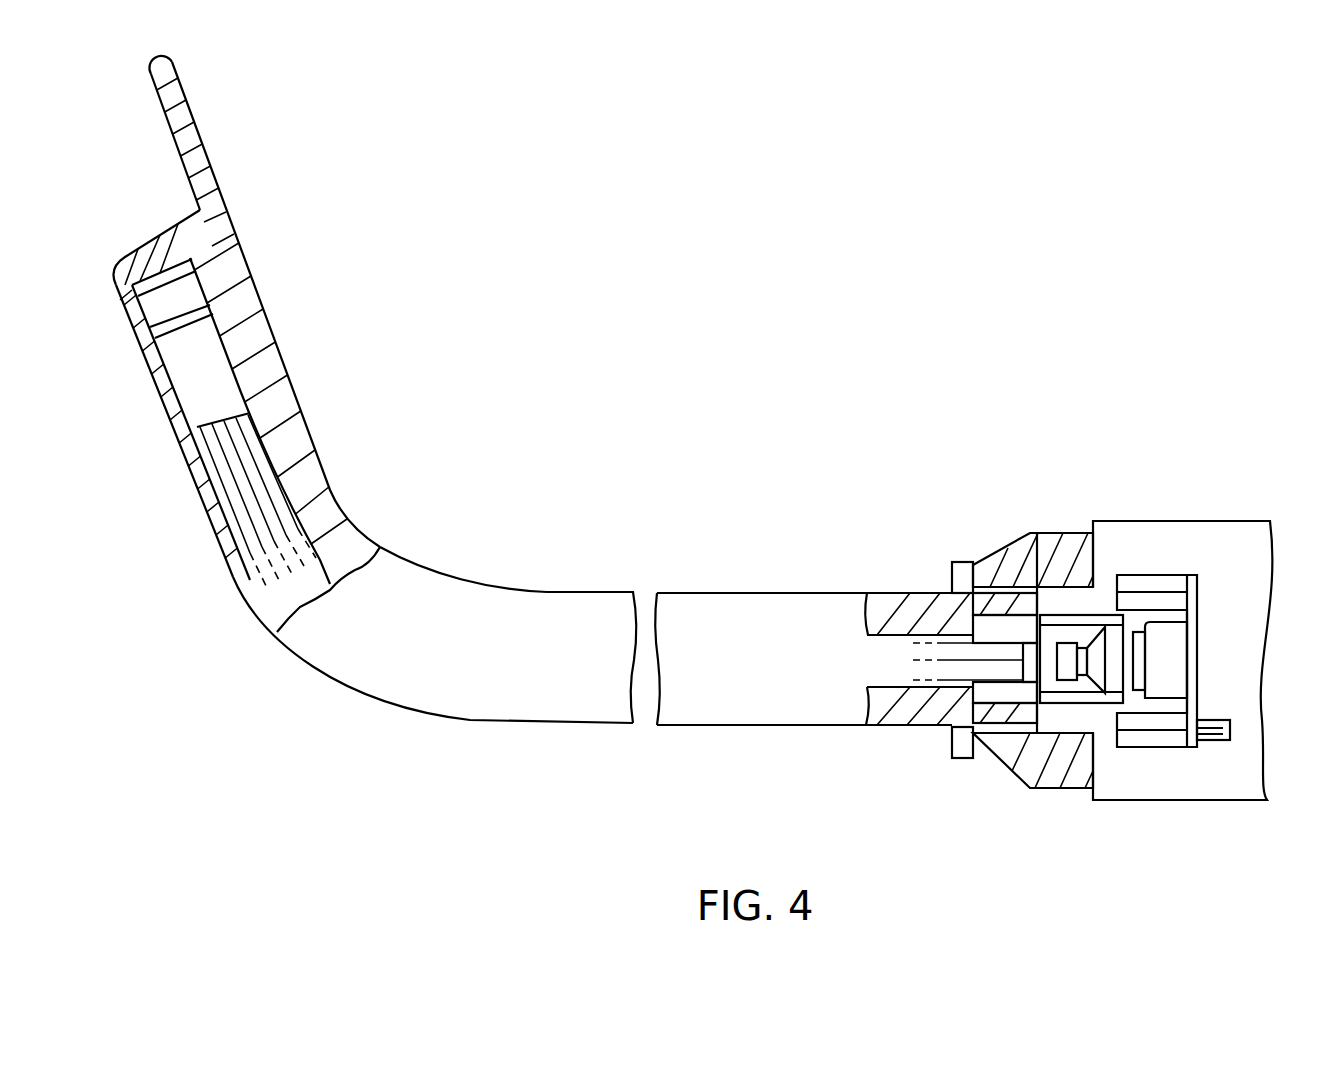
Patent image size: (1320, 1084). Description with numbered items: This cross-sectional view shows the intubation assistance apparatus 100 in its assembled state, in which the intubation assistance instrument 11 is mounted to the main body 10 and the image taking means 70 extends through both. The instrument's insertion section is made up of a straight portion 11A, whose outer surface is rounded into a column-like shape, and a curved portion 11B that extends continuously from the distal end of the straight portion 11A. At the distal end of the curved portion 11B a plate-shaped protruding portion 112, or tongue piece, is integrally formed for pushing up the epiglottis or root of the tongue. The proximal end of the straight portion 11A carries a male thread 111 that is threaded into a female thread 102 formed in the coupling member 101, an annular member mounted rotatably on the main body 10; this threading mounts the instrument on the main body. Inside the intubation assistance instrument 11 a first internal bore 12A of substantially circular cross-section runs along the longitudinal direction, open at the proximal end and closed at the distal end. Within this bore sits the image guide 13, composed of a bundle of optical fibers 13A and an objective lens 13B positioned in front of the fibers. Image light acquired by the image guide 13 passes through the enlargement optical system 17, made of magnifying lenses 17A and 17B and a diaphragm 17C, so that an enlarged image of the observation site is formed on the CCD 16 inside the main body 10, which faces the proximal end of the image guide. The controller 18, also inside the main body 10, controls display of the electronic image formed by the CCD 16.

The intubation assistance apparatus 100 is at (1117, 275).
The image taking means 70 is at (1001, 340).
The main body 10 is at (1226, 536).
The intubation assistance instrument 11 is at (548, 588).
The straight portion 11A is at (718, 700).
The curved portion 11B is at (375, 673).
The first internal bore 12A is at (186, 258).
The image guide 13 is at (355, 242).
The bundle of optical fibers 13A is at (250, 448).
The objective lens 13B is at (207, 316).
The protruding portion 112 is at (175, 112).
The male thread 111 is at (995, 582).
The coupling member 101 is at (1060, 763).
The female thread 102 is at (1023, 577).
The CCD 16 is at (1140, 683).
The enlargement optical system 17 is at (1043, 442).
The magnifying lens 17A is at (1081, 655).
The magnifying lens 17B is at (1097, 643).
The diaphragm 17C is at (1060, 650).
The controller 18 is at (1174, 655).